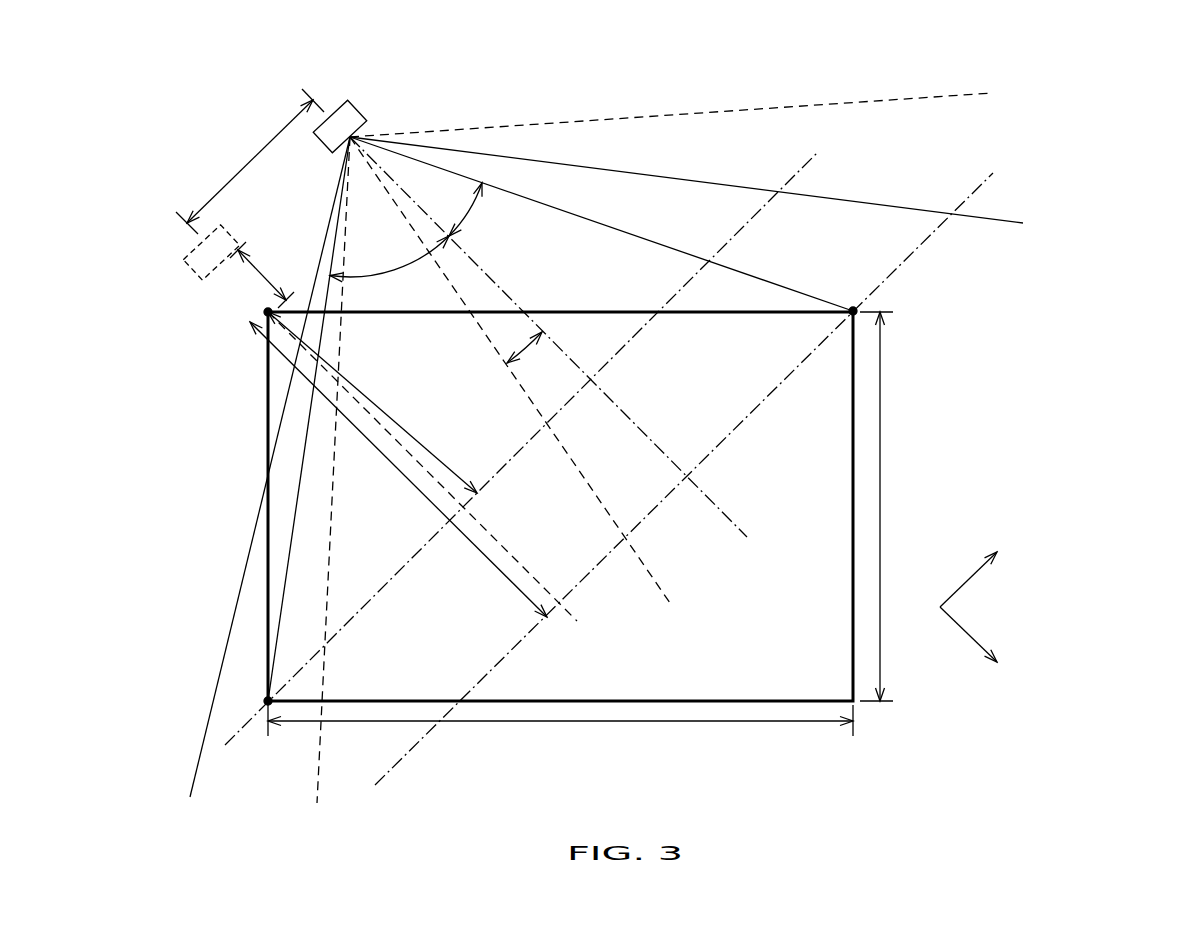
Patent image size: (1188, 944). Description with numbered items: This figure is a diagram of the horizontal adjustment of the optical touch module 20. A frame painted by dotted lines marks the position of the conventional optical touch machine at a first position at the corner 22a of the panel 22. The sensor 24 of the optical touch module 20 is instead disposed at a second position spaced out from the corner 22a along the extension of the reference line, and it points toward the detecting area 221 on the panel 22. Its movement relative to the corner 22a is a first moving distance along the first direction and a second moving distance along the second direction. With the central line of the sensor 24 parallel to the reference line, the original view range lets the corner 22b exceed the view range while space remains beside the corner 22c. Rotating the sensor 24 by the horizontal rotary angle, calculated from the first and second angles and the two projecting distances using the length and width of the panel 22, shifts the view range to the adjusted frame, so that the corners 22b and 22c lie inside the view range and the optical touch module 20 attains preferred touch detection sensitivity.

The optical touch module 20 is at (667, 437).
The panel 22 is at (835, 424).
The detecting area 221 is at (787, 648).
The corner 22a is at (265, 311).
The corner 22b is at (268, 704).
The corner 22c is at (853, 309).
The sensor 24 is at (353, 113).